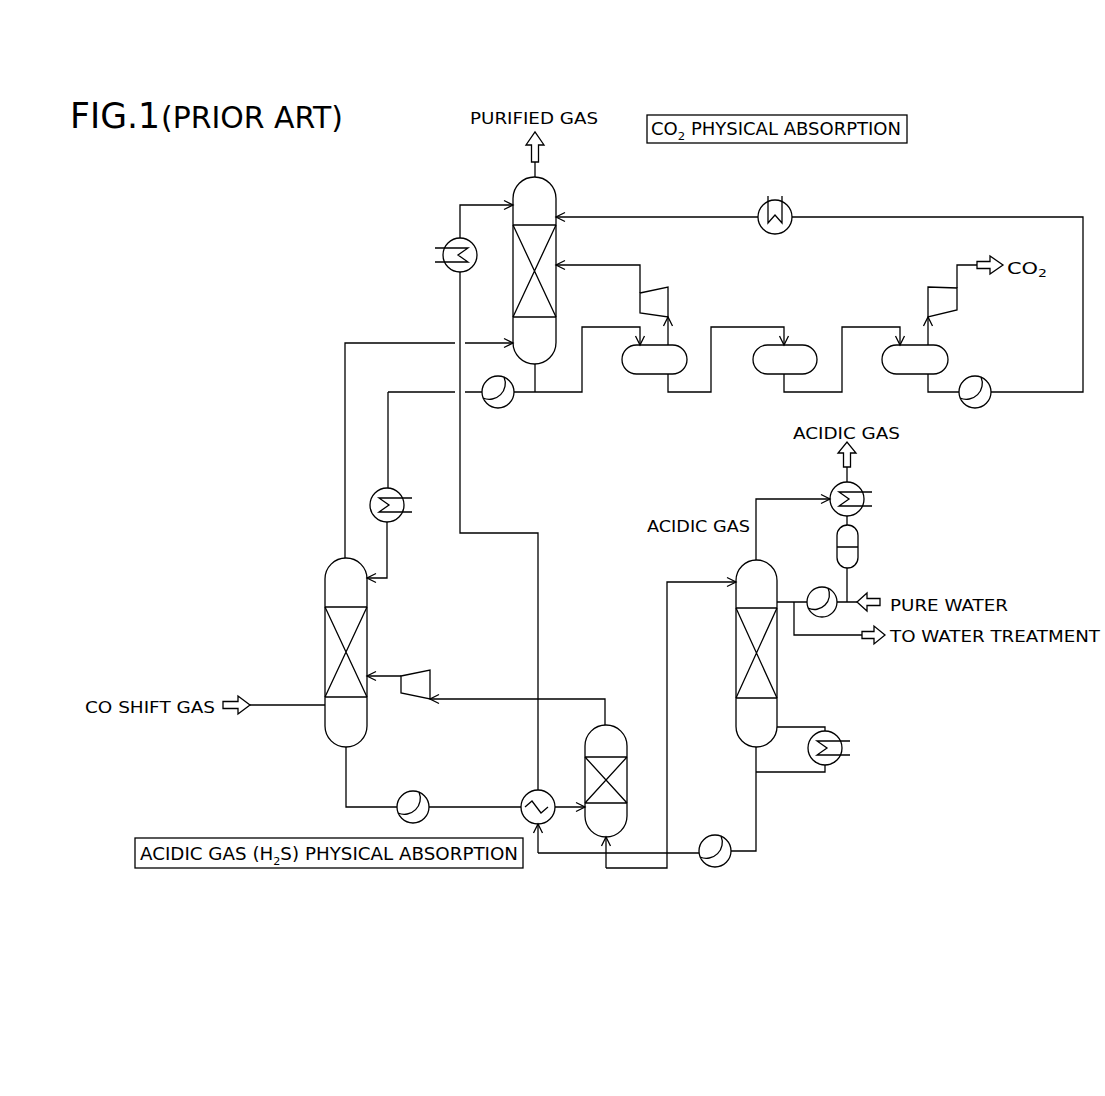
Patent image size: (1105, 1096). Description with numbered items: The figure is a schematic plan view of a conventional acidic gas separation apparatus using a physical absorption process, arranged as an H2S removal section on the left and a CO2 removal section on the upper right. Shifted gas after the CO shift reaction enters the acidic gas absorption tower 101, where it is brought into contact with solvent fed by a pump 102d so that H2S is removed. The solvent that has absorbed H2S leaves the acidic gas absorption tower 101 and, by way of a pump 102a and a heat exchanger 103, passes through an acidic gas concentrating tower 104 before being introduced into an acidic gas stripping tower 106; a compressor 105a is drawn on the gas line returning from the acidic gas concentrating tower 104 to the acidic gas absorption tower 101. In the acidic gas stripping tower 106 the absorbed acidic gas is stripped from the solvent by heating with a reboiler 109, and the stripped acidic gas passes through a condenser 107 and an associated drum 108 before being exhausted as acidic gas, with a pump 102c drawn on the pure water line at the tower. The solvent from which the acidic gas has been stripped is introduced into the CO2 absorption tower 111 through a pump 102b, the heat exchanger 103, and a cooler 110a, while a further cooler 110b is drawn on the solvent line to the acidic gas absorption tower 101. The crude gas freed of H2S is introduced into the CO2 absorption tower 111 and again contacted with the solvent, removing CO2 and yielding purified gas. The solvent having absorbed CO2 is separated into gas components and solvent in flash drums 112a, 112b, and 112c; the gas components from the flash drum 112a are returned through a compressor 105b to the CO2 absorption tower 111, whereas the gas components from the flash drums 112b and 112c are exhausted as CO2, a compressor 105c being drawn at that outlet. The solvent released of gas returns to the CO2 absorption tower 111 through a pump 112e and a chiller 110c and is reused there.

The acidic gas absorption tower 101 is at (333, 565).
The pump 102a is at (406, 791).
The pump 102b is at (726, 838).
The pump 102c is at (812, 592).
The pump 102d is at (500, 408).
The heat exchanger 103 is at (526, 793).
The acidic gas concentrating tower 104 is at (610, 726).
The compressor 105a is at (431, 678).
The compressor 105b is at (651, 292).
The compressor 105c is at (928, 300).
The acidic gas stripping tower 106 is at (777, 673).
The condenser 107 is at (865, 484).
The separator drum 108 is at (862, 553).
The reboiler 109 is at (835, 768).
The cooler 110a is at (447, 245).
The cooler 110b is at (398, 518).
The chiller 110c is at (791, 207).
The CO2 absorption tower 111 is at (513, 187).
The flash drum 112a is at (638, 376).
The flash drum 112b is at (768, 376).
The flash drum 112c is at (950, 352).
The pump 112e is at (985, 405).